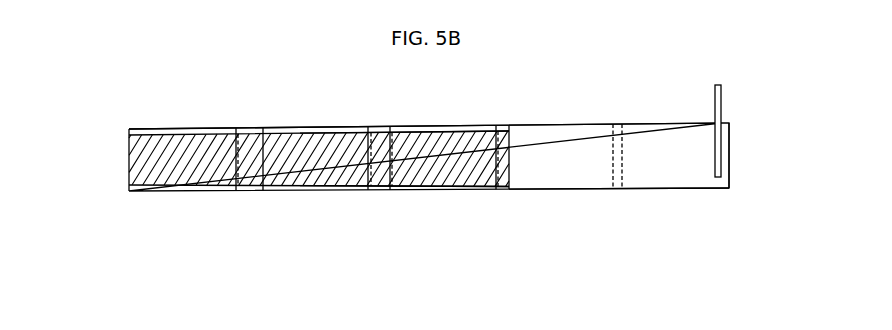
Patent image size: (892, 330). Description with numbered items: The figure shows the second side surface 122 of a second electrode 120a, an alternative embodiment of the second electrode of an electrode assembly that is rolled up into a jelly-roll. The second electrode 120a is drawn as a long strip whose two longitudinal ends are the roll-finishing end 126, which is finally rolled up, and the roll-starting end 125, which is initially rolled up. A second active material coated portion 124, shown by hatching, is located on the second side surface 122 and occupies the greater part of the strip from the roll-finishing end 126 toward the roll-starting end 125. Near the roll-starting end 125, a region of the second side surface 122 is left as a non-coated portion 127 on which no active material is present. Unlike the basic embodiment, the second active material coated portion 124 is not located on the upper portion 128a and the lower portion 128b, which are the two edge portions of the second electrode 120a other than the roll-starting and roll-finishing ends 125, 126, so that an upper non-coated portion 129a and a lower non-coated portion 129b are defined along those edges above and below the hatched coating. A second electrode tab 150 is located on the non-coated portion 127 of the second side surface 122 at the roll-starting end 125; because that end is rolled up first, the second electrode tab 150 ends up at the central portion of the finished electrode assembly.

The second electrode 120a is at (230, 98).
The second side surface 122 is at (262, 127).
The second active material coated portion 124 is at (380, 130).
The roll-starting end 125 is at (738, 158).
The roll-finishing end 126 is at (121, 163).
The non-coated portion 127 is at (583, 138).
The upper portion 128a is at (344, 118).
The lower portion 128b is at (345, 201).
The upper non-coated portion 129a is at (438, 128).
The lower non-coated portion 129b is at (438, 190).
The second electrode tab 150 is at (721, 101).